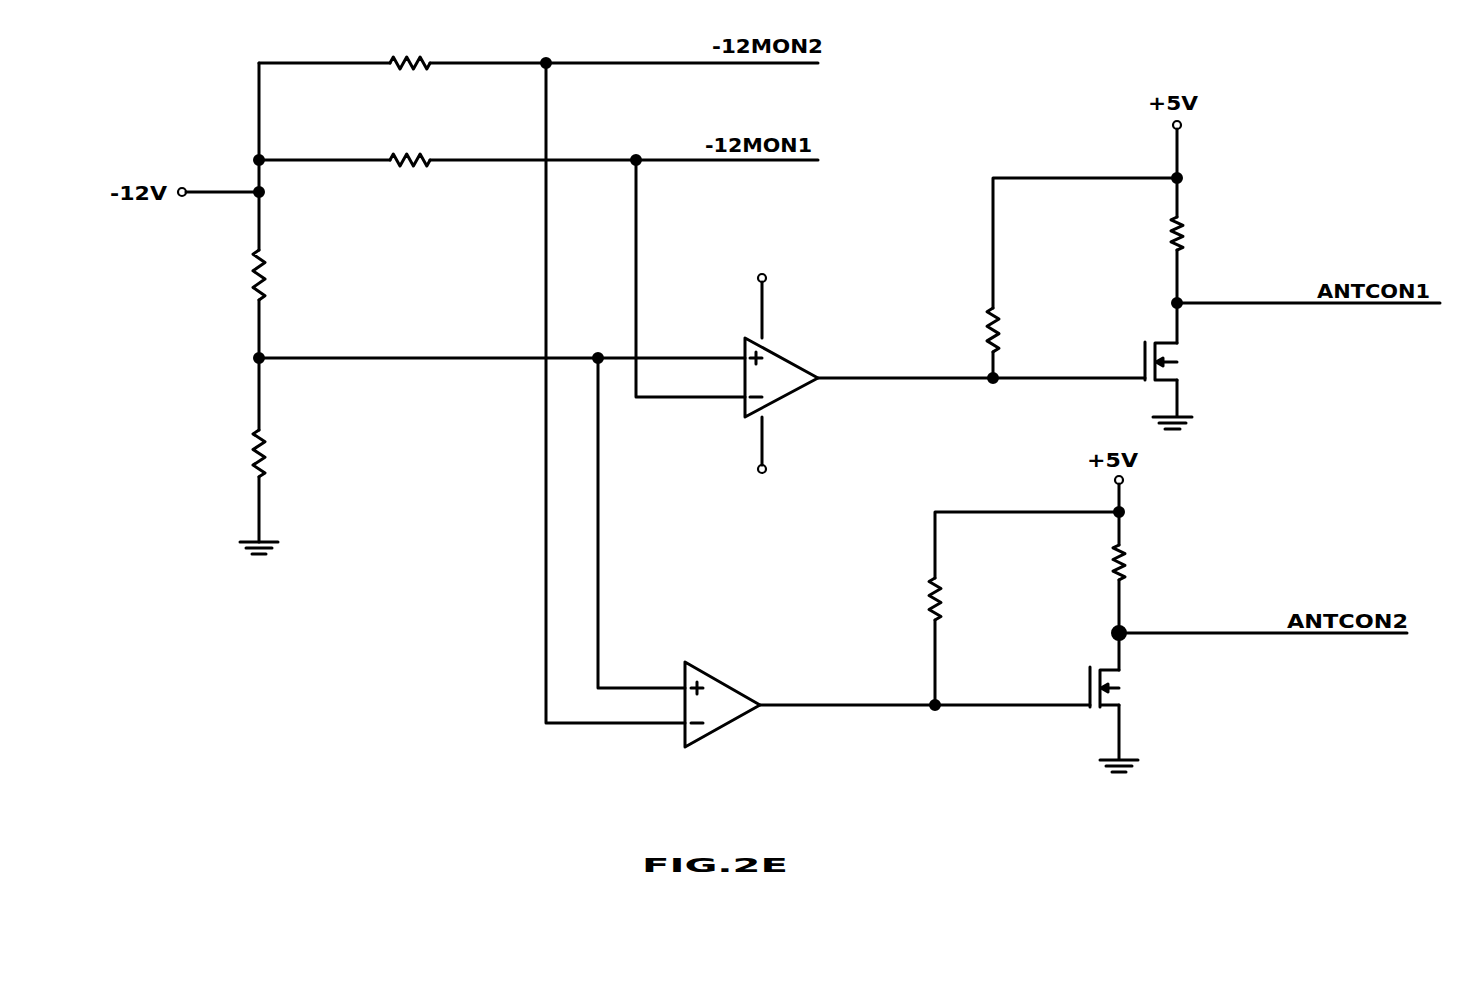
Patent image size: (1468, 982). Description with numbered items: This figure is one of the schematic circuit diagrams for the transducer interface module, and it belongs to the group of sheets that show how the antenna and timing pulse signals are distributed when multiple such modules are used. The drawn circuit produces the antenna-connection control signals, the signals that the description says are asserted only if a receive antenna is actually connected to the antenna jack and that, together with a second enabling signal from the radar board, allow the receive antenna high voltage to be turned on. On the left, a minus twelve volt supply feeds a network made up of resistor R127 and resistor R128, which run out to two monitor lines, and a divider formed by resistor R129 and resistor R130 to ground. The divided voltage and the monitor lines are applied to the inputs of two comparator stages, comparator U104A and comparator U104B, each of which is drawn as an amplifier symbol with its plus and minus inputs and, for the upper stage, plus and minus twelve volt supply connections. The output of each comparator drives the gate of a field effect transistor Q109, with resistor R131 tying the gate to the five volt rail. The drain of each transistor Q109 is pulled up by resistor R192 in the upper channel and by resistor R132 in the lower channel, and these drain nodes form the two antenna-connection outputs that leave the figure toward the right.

The resistor R127 2.2 ohm R127 is at (416, 65).
The resistor R128 2.2 ohm R128 is at (416, 158).
The resistor R129 82 ohm R129 is at (298, 275).
The resistor R130 100K R130 is at (298, 454).
The resistor R131 100K R131 is at (1001, 466).
The resistor R192 100K R192 is at (1218, 235).
The resistor R132 100K R132 is at (1158, 567).
The comparator U104A is at (797, 378).
The comparator U104B is at (736, 698).
The transistor Q109 is at (1177, 552).